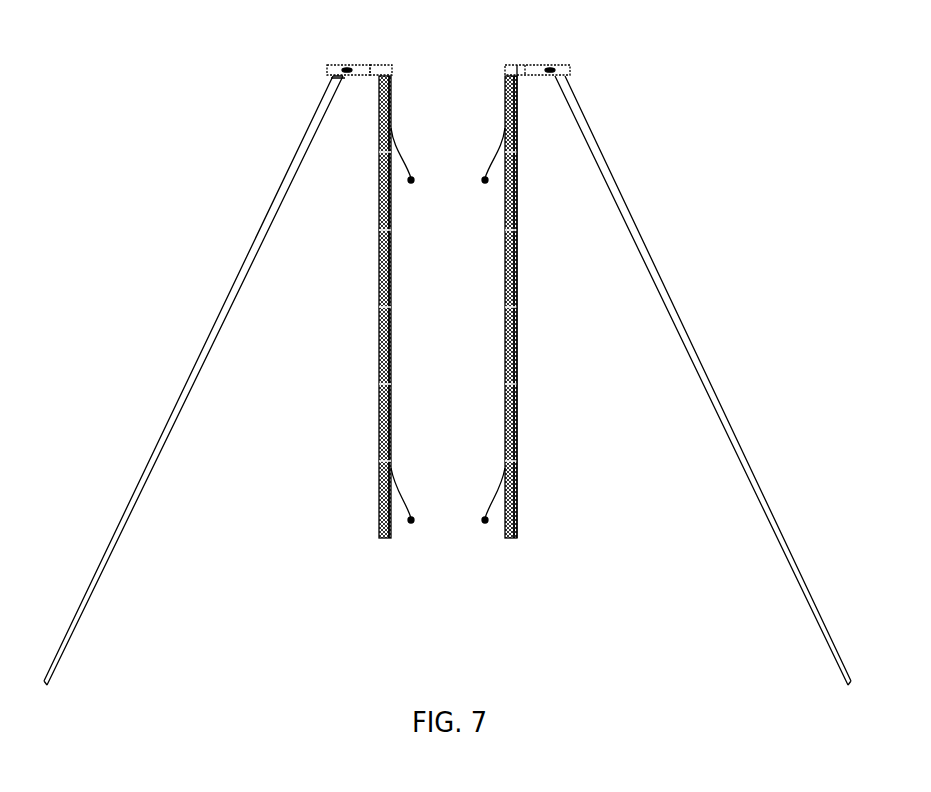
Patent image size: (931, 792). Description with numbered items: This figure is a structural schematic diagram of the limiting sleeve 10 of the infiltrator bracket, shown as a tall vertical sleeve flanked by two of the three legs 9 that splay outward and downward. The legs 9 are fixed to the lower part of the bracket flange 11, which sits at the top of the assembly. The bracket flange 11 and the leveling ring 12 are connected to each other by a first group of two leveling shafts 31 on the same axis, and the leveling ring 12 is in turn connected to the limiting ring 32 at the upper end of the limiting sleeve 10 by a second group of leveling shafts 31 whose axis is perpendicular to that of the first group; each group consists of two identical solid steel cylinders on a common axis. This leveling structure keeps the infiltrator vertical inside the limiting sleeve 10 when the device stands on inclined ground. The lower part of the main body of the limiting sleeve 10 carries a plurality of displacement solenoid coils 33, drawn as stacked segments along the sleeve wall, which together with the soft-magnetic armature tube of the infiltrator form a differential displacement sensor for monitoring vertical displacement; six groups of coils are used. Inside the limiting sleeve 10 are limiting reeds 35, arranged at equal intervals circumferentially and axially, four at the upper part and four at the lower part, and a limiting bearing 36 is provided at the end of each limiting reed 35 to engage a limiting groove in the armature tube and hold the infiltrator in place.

The legs 9 is at (180, 410).
The limiting sleeve 10 is at (558, 295).
The bracket flange 11 is at (336, 76).
The leveling ring 12 is at (361, 65).
The leveling shafts 31 is at (345, 68).
The limiting ring 32 is at (383, 70).
The displacement solenoid coils 33 is at (517, 133).
The limiting reeds 35 is at (395, 480).
The limiting bearing 36 is at (485, 520).